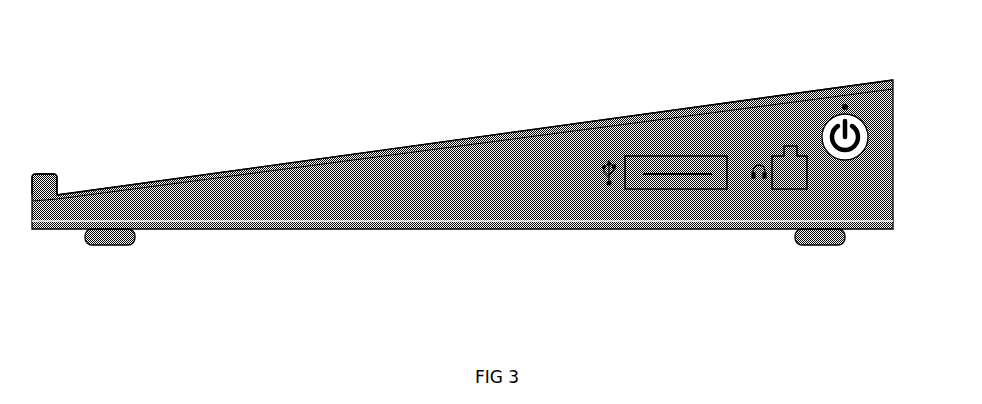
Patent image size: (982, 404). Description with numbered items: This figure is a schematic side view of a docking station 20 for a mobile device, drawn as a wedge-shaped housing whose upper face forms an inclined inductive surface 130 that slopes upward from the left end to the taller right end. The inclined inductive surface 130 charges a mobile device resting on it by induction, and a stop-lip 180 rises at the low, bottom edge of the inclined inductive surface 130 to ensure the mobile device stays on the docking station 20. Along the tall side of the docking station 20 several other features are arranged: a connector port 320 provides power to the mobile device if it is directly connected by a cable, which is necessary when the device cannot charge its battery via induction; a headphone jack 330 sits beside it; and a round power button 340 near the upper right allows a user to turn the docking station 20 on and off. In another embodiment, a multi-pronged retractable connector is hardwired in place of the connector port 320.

The docking station 20 is at (372, 178).
The inclined inductive surface 130 is at (434, 146).
The stop-lip 180 is at (46, 173).
The connector port 320 is at (661, 190).
The headphone jack 330 is at (783, 172).
The power button 340 is at (830, 122).